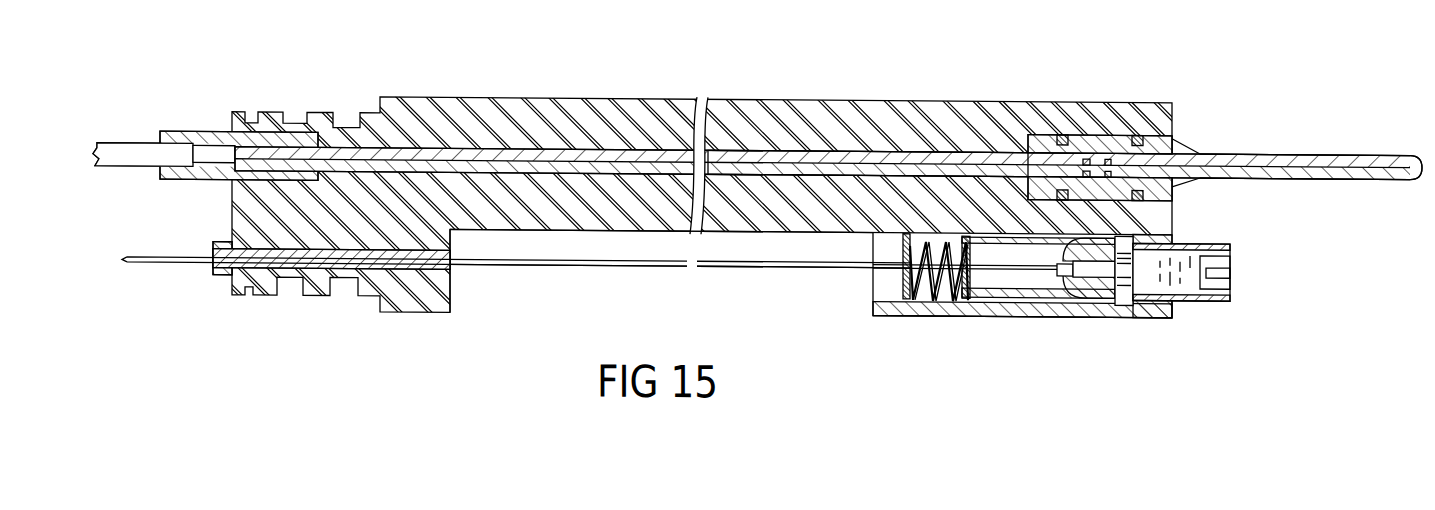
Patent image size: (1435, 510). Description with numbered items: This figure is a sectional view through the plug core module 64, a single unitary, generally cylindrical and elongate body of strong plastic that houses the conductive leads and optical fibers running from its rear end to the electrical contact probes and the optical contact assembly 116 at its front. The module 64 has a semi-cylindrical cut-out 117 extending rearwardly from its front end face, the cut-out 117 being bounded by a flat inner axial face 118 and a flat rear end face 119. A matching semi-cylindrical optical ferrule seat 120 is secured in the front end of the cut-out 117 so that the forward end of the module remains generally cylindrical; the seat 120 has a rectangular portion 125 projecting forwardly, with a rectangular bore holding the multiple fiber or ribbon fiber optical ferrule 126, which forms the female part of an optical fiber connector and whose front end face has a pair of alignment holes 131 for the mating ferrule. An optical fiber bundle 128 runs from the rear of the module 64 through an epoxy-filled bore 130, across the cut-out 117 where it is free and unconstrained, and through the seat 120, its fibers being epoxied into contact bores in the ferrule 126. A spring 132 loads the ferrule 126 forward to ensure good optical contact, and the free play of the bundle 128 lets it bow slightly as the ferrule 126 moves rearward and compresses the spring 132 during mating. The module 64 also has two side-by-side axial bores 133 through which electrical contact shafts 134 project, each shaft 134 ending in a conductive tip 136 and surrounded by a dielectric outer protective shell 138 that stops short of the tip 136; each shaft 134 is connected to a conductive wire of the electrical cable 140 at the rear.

The plug core module 64 is at (900, 113).
The optical contact assembly 116 is at (1125, 321).
The semi-cylindrical cut-out 117 is at (803, 239).
The inner axial face 118 is at (873, 281).
The rear end face 119 is at (450, 277).
The optical ferrule seat 120 is at (1065, 313).
The rectangular portion 125 is at (1205, 294).
The optical ferrule 126 is at (1223, 251).
The optical fiber bundle 128 is at (640, 266).
The epoxy-filled bore 130 is at (343, 267).
The alignment holes 131 is at (1213, 269).
The spring 132 is at (947, 293).
The axially extending bores 133 is at (548, 151).
The electrical contact shaft 134 is at (747, 160).
The conductive tip 136 is at (1400, 155).
The outer protective shell 138 is at (1255, 151).
The electrical cable 140 is at (145, 154).